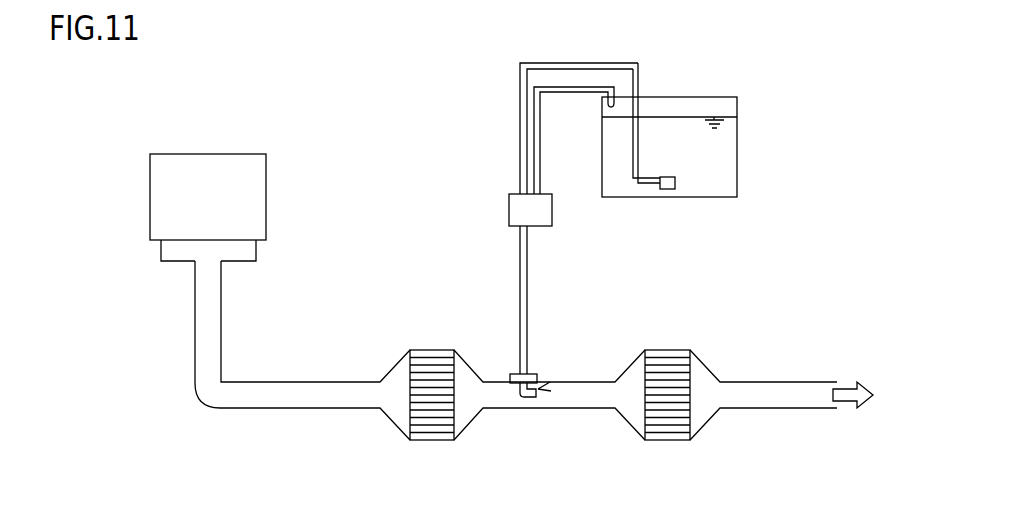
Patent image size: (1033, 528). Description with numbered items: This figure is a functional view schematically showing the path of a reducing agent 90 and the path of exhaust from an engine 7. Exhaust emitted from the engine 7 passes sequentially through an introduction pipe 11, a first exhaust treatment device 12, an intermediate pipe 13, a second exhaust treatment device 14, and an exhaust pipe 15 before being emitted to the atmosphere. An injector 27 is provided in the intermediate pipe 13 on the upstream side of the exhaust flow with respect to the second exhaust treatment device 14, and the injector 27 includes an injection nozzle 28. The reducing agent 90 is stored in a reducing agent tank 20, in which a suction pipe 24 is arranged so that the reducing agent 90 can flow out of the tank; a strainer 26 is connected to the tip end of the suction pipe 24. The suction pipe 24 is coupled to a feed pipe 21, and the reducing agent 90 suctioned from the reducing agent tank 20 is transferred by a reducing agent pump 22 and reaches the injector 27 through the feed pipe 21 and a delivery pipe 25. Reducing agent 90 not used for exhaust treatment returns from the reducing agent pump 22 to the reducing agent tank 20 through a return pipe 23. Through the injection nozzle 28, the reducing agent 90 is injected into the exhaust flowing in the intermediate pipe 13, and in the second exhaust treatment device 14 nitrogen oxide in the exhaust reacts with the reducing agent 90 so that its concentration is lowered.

The engine 7 is at (162, 197).
The introduction pipe 11 is at (278, 401).
The first exhaust treatment device 12 is at (433, 430).
The intermediate pipe 13 is at (578, 404).
The second exhaust treatment device 14 is at (671, 430).
The exhaust pipe 15 is at (777, 400).
The reducing agent tank 20 is at (740, 123).
The reducing agent 90 is at (723, 150).
The feed pipe 21 is at (520, 147).
The reducing agent pump 22 is at (516, 210).
The return pipe 23 is at (541, 147).
The suction pipe 24 is at (640, 142).
The delivery pipe 25 is at (520, 301).
The strainer 26 is at (666, 192).
The injector 27 is at (538, 389).
The injection nozzle 28 is at (530, 398).